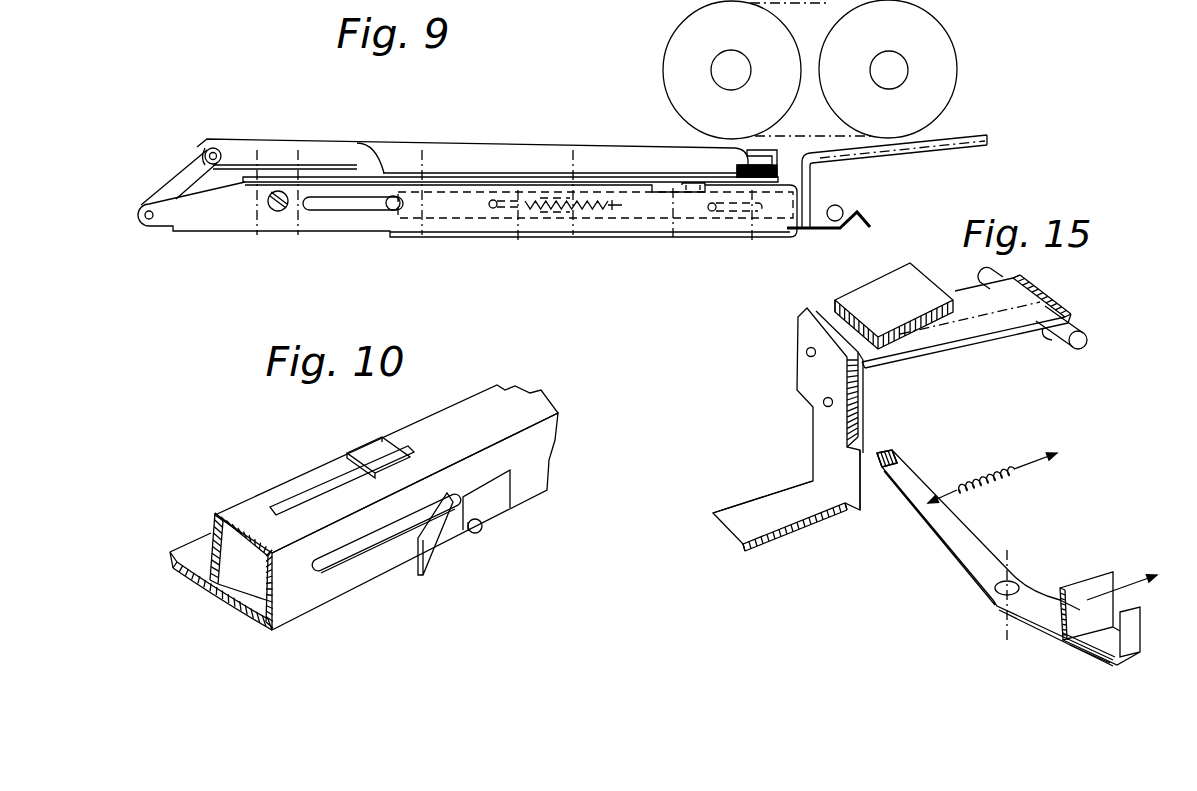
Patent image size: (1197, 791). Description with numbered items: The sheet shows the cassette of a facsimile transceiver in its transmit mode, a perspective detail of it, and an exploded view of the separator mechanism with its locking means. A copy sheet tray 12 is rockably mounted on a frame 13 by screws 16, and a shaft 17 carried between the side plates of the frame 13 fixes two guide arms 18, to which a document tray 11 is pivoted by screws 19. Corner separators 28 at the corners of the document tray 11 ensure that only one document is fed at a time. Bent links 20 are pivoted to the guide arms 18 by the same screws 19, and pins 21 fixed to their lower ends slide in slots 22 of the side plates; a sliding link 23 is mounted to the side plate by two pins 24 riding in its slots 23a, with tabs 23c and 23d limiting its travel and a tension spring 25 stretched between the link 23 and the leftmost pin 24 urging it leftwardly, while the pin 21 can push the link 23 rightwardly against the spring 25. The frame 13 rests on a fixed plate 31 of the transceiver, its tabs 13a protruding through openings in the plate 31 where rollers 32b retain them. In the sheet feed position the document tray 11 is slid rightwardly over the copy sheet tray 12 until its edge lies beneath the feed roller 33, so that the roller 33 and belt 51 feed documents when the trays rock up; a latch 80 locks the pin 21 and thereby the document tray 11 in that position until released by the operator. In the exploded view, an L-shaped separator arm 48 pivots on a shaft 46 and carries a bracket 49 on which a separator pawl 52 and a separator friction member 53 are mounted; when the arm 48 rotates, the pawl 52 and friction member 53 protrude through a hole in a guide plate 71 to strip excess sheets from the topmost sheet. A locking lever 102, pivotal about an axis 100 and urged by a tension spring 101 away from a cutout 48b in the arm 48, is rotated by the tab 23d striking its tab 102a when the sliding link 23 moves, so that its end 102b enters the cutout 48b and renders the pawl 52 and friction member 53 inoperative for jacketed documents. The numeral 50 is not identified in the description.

In FIG. 9, the document tray 11 is at (474, 143).
In FIG. 9, the copy sheet tray 12 is at (250, 183).
In FIG. 10, the copy sheet tray 12 is at (247, 505).
In FIG. 9, the frame 13 is at (322, 226).
In FIG. 10, the frame 13 is at (300, 595).
In FIG. 9, the tabs 13a is at (868, 222).
In FIG. 9, the screws 16 is at (280, 211).
In FIG. 9, the shaft 17 is at (152, 230).
In FIG. 9, the guide arms 18 is at (180, 176).
In FIG. 9, the screws 19 is at (214, 148).
In FIG. 9, the bent links 20 is at (318, 162).
In FIG. 10, the bent links 20 is at (366, 446).
In FIG. 9, the pins 21 is at (390, 210).
In FIG. 10, the pins 21 is at (483, 528).
In FIG. 9, the slots 22 is at (355, 212).
In FIG. 10, the slots 22 is at (392, 537).
In FIG. 9, the sliding links 23 is at (452, 220).
In FIG. 15, the sliding links 23 is at (1084, 588).
In FIG. 9, the slots 23a is at (518, 240).
In FIG. 9, the tab 23c is at (692, 193).
In FIG. 15, the tab 23d is at (1085, 653).
In FIG. 9, the pins 24 is at (492, 209).
In FIG. 9, the tension spring 25 is at (545, 211).
In FIG. 9, the corner separators 28 is at (745, 158).
In FIG. 9, the fixed plate 31 is at (655, 240).
In FIG. 9, the rollers 32b is at (843, 208).
In FIG. 9, the feed roller 33 is at (690, 36).
In FIG. 15, the shaft 46 is at (1082, 330).
In FIG. 15, the separator arm 48 is at (958, 346).
In FIG. 15, the cutout 48b is at (860, 473).
In FIG. 15, the bracket 49 is at (862, 353).
In FIG. 9, the take-up roll 50 is at (935, 40).
In FIG. 9, the belt 51 is at (822, 6).
In FIG. 15, the separator pawl 52 is at (797, 341).
In FIG. 15, the separator friction member 53 is at (920, 280).
In FIG. 9, the guide plate 71 is at (958, 134).
In FIG. 10, the latch 80 is at (445, 546).
In FIG. 15, the axis 100 is at (1014, 556).
In FIG. 15, the tension spring 101 is at (1012, 477).
In FIG. 15, the locking lever 102 is at (965, 554).
In FIG. 15, the tab 102a is at (1140, 598).
In FIG. 15, the end 102b is at (905, 472).